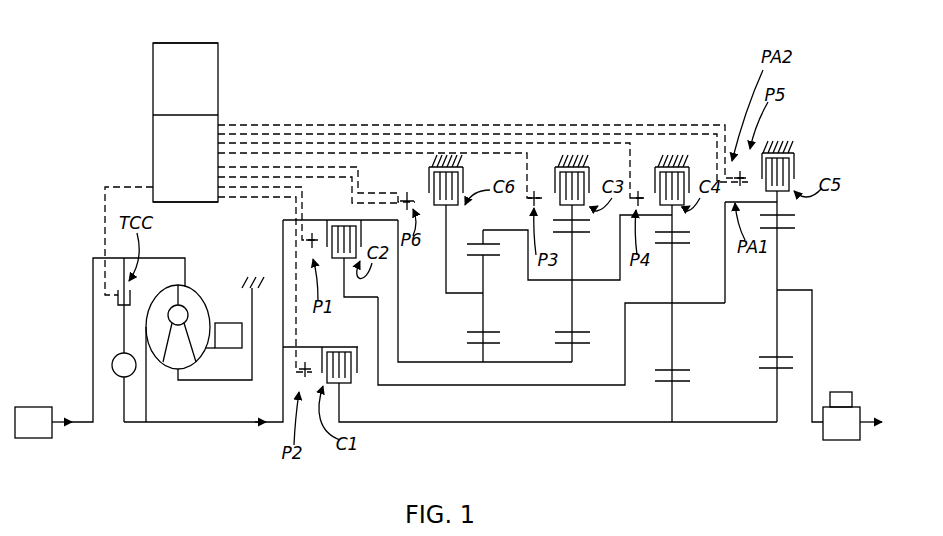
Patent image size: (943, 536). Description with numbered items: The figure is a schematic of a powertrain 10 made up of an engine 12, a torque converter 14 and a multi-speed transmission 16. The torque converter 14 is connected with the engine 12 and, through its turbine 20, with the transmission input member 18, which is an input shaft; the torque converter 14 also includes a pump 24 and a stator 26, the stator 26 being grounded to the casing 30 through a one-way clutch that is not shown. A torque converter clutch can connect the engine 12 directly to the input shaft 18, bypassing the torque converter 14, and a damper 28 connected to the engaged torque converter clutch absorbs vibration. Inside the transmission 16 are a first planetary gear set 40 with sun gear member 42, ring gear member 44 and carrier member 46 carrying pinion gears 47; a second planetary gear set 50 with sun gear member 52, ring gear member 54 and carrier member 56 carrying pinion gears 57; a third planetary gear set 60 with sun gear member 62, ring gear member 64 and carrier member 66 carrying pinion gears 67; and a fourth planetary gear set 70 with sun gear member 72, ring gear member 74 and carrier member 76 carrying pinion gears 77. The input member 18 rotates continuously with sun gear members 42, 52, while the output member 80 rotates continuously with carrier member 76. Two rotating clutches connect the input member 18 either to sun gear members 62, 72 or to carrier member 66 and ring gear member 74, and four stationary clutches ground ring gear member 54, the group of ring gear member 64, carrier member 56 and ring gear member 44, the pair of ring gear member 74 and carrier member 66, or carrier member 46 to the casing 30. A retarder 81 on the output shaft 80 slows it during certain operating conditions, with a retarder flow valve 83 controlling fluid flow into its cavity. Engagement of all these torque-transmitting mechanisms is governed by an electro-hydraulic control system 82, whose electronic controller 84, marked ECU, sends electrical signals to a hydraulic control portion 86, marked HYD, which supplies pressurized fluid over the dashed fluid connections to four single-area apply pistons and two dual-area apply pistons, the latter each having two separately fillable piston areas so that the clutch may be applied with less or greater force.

The powertrain 10 is at (567, 41).
The engine 12 is at (22, 438).
The torque converter 14 is at (186, 342).
The multi-speed transmission 16 is at (645, 80).
The transmission input member 18 is at (228, 431).
The turbine 20 is at (156, 296).
The pump 24 is at (207, 313).
The stator 26 is at (175, 369).
The damper 28 is at (120, 376).
The casing 30 is at (251, 276).
The first planetary gear set 40 is at (508, 330).
The sun gear member 42 is at (480, 347).
The ring gear member 44 is at (483, 241).
The carrier member 46 is at (448, 294).
The pinion gears 47 is at (486, 260).
The second planetary gear set 50 is at (569, 311).
The sun gear member 52 is at (572, 337).
The ring gear member 54 is at (583, 219).
The carrier member 56 is at (583, 282).
The pinion gears 57 is at (570, 291).
The third planetary gear set 60 is at (558, 336).
The sun gear member 62 is at (682, 386).
The ring gear member 64 is at (688, 236).
The carrier member 66 is at (643, 307).
The pinion gears 67 is at (673, 342).
The fourth planetary gear set 70 is at (786, 327).
The sun gear member 72 is at (763, 368).
The ring gear member 74 is at (787, 215).
The carrier member 76 is at (800, 288).
The pinion gears 77 is at (762, 270).
The output member 80 is at (867, 417).
The retarder 81 is at (835, 440).
The electro-hydraulic control system 82 is at (127, 126).
The retarder flow valve 83 is at (840, 392).
The electronic controller 84 is at (215, 43).
The hydraulic control portion 86 is at (155, 164).